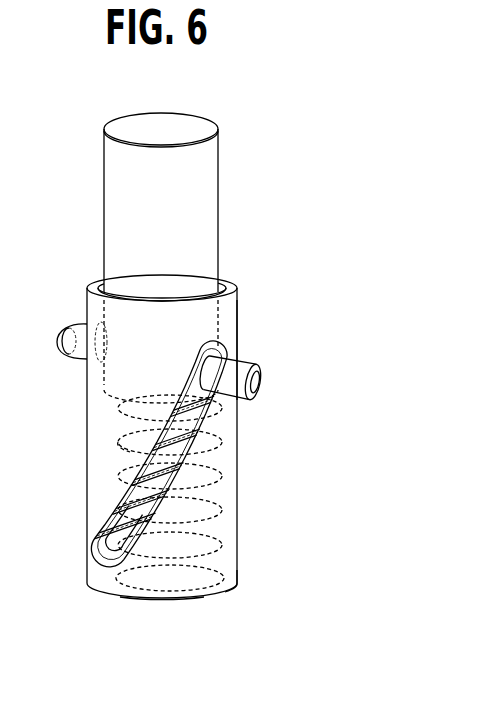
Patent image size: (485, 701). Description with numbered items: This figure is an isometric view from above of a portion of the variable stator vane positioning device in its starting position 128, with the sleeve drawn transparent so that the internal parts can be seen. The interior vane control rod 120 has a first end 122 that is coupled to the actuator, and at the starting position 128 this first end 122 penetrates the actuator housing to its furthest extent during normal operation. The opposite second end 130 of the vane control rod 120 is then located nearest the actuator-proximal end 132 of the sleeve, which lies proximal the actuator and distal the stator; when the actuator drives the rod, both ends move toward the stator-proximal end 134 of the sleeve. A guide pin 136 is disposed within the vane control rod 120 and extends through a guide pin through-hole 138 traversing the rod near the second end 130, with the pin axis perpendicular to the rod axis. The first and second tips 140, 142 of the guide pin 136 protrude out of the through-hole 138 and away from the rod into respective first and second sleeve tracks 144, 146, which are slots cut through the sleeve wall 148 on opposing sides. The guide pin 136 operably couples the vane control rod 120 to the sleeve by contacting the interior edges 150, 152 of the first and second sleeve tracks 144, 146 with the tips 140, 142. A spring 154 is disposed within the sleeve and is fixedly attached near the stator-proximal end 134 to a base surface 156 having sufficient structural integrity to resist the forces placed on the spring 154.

The vane control rod 120 is at (199, 167).
The first end 122 is at (182, 124).
The starting position 128 is at (316, 196).
The second end 130 is at (88, 378).
The actuator-proximal end 132 is at (226, 282).
The stator-proximal end 134 is at (205, 602).
The guide pin 136 is at (246, 400).
The guide pin through-hole 138 is at (237, 340).
The first tip 140 is at (60, 336).
The second tip 142 is at (246, 364).
The first sleeve track 144 is at (101, 412).
The second sleeve track 146 is at (97, 548).
The sleeve wall 148 is at (218, 535).
The interior edge of first sleeve track 150 is at (90, 446).
The interior edge of second sleeve track 152 is at (217, 432).
The spring 154 is at (158, 604).
The base surface 156 is at (241, 583).